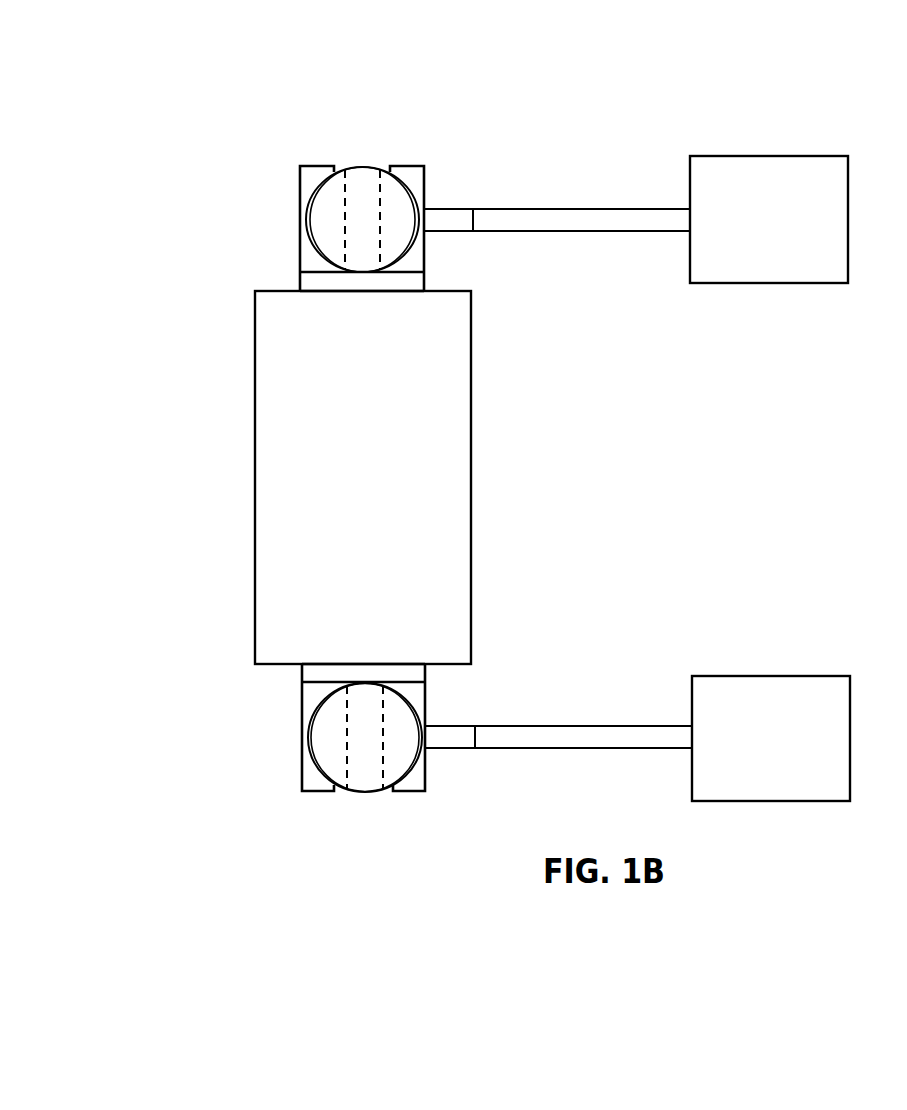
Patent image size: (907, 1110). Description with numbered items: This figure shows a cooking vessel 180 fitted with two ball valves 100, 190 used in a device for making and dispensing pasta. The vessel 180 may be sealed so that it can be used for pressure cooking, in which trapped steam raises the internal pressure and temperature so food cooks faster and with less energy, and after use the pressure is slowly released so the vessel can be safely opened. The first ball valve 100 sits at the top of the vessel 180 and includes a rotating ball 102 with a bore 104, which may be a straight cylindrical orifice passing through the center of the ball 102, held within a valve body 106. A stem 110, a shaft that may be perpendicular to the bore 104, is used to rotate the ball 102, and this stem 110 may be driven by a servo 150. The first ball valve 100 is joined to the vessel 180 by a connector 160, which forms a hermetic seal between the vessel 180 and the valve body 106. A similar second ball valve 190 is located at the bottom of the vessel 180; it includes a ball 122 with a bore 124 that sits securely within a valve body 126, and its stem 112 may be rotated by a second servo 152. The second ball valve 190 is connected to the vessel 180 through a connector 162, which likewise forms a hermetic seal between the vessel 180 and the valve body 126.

The ball valve 100 is at (197, 168).
The rotating ball 102 is at (330, 215).
The bore 104 is at (368, 200).
The valve body 106 is at (315, 178).
The stem 110 is at (547, 208).
The stem 112 is at (555, 735).
The ball 122 is at (332, 727).
The bore 124 is at (358, 778).
The valve body 126 is at (317, 783).
The servo 150 is at (763, 165).
The servo 152 is at (807, 687).
The connector 160 is at (355, 285).
The connector 162 is at (340, 670).
The cooking vessel 180 is at (453, 470).
The ball valve 190 is at (203, 825).